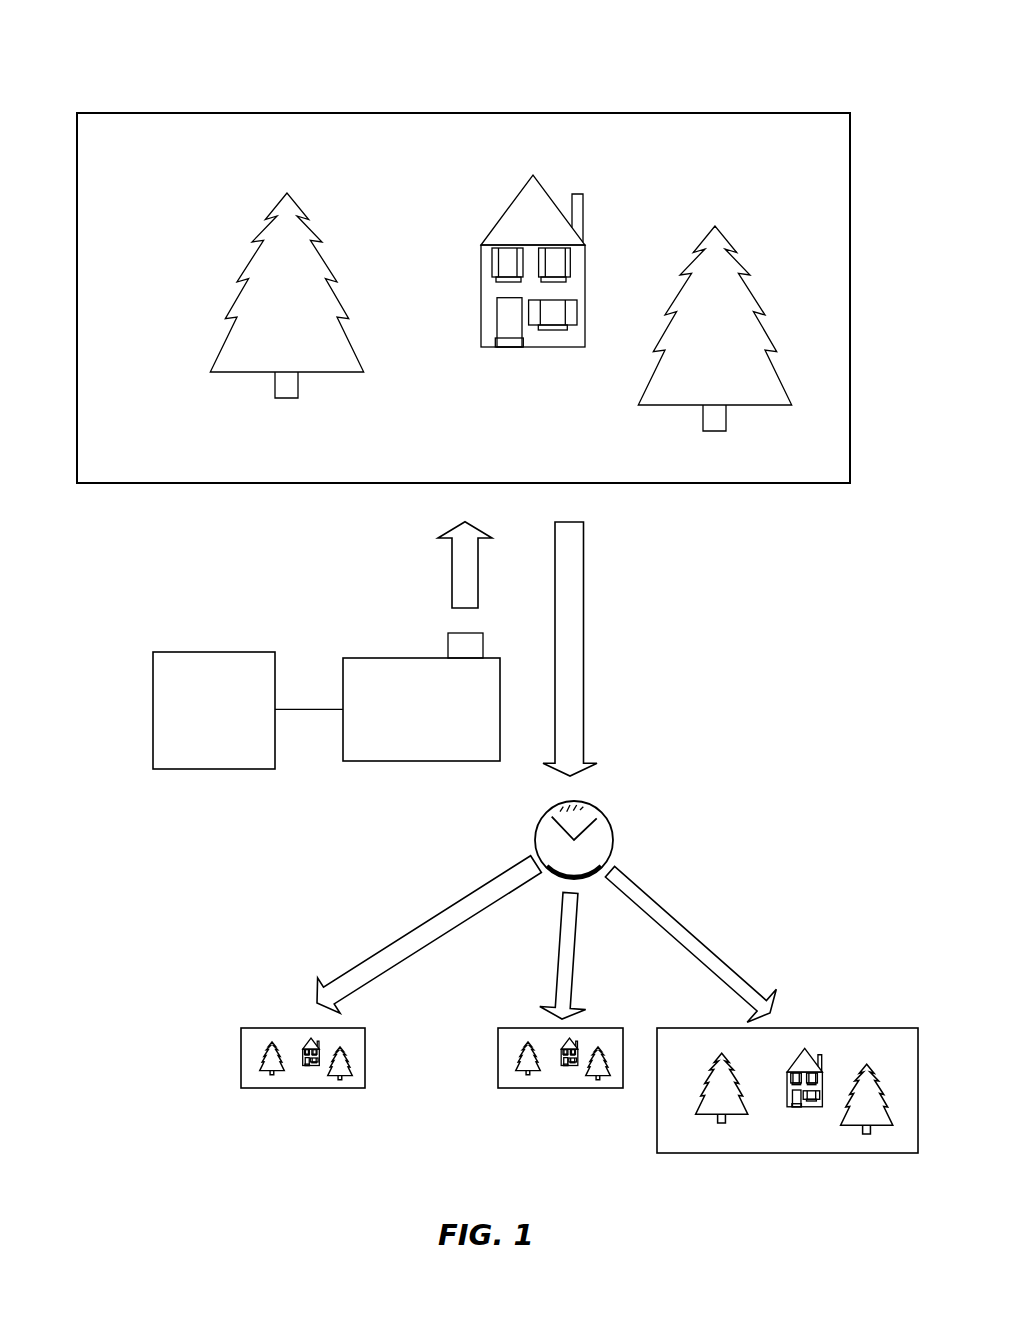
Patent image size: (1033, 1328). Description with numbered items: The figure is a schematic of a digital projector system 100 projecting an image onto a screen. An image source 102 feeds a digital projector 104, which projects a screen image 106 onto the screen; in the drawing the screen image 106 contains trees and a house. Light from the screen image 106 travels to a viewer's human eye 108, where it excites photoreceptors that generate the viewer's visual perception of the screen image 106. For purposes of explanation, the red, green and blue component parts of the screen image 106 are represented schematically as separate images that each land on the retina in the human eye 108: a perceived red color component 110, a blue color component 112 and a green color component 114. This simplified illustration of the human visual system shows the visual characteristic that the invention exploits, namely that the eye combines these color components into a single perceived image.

The digital projector system 100 is at (135, 45).
The image source 102 is at (215, 652).
The digital projector 104 is at (422, 658).
The screen image 106 is at (289, 113).
The human eye 108 is at (608, 827).
The red color component 110 is at (240, 1057).
The blue color component 112 is at (497, 1057).
The green color component 114 is at (787, 1028).